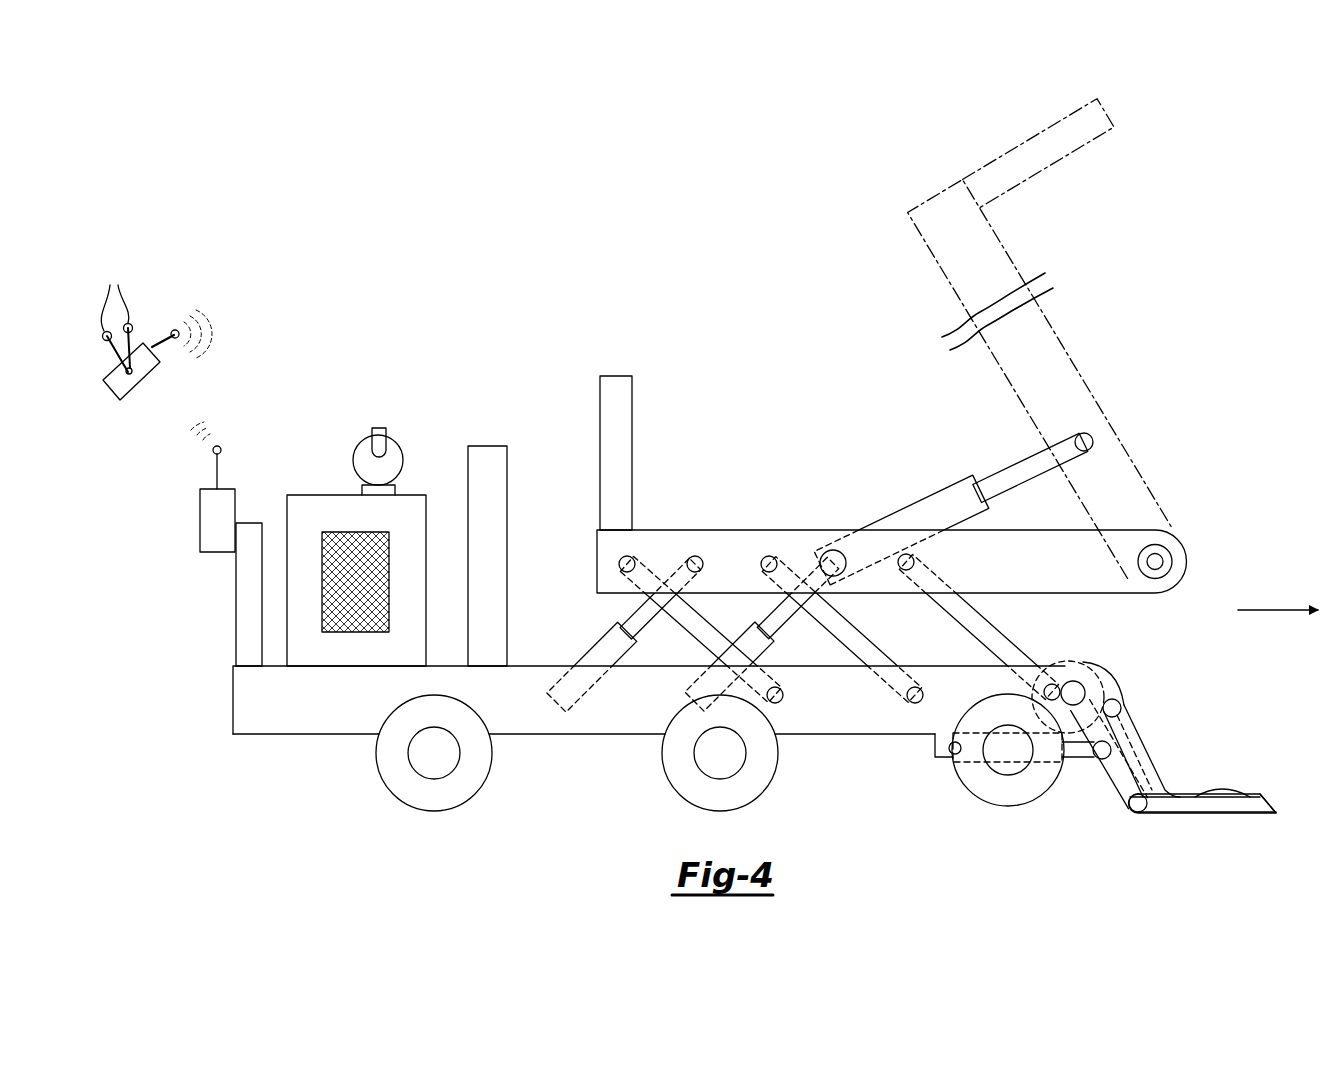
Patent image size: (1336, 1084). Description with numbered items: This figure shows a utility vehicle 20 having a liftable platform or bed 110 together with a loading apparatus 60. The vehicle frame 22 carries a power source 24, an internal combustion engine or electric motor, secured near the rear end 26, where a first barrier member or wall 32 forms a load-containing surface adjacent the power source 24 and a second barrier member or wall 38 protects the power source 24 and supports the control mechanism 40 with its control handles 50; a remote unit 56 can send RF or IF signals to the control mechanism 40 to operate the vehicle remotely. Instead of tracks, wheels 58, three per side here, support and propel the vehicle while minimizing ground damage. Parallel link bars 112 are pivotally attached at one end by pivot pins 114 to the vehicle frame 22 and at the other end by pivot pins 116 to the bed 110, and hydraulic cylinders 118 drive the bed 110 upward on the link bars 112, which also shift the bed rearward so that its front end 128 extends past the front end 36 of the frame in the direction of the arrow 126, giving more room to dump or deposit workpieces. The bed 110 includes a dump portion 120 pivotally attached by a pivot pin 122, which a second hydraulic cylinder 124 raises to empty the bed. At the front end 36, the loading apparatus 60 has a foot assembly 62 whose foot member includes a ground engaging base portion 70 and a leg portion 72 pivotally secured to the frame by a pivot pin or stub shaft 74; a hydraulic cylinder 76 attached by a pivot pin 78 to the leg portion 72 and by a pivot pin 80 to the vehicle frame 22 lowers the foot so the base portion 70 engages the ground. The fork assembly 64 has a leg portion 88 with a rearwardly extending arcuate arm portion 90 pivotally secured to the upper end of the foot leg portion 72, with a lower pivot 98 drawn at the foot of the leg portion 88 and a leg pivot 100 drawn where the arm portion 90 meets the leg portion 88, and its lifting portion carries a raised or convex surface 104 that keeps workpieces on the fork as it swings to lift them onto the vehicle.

The utility vehicle 20 is at (693, 358).
The vehicle frame 22 is at (318, 742).
The power source 24 is at (318, 493).
The rear end 26 is at (230, 690).
The first barrier member or wall 32 is at (488, 450).
The front end 36 is at (1100, 670).
The second barrier member or wall 38 is at (252, 522).
The control mechanism 40 is at (200, 556).
The control handles 50 is at (115, 316).
The remote unit 56 is at (115, 392).
The wheels 58 is at (432, 790).
The loading apparatus 60 is at (1222, 757).
The foot assembly 62 is at (1178, 825).
The fork assembly 64 is at (1185, 775).
The base portion or ground engaging member 70 is at (1262, 815).
The leg portion 72 is at (1120, 790).
The pivot pins or stub shafts 74 is at (1080, 682).
The hydraulic cylinders 76 is at (1048, 762).
The pivot pin 78 is at (1095, 760).
The pivot pin 80 is at (945, 765).
The leg portion 88 is at (1140, 730).
The arm portion 90 is at (1115, 685).
The lower pivot 98 is at (1140, 812).
The leg pivot 100 is at (1121, 708).
The raised or convex surface 104 is at (1224, 780).
The liftable platform or bed 110 is at (820, 530).
The parallel link bars 112 is at (702, 660).
The pivot pins 114 is at (907, 695).
The pivot pins 116 is at (626, 564).
The hydraulic cylinders 118 is at (598, 655).
The dump portion 120 is at (1100, 385).
The pivot pin 122 is at (1160, 560).
The hydraulic cylinder 124 is at (898, 512).
The arrow 126 is at (1280, 590).
The front end 128 is at (1160, 570).